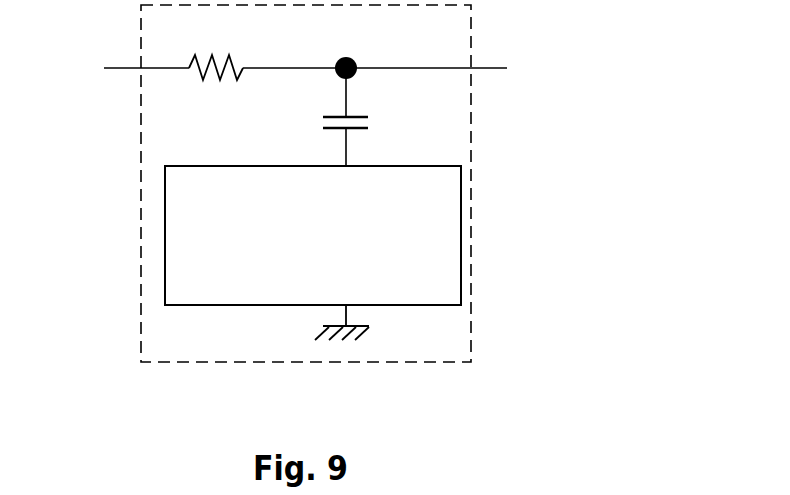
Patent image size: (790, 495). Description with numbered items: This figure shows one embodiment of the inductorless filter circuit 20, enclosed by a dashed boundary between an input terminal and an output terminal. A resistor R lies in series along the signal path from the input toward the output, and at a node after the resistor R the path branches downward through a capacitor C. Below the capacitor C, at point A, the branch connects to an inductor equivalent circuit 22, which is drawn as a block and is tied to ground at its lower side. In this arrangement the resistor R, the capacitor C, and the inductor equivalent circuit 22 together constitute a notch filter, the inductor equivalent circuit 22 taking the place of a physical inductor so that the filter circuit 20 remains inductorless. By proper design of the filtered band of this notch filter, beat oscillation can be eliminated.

The inductorless filter circuit 20 is at (328, 183).
The inductor equivalent circuit 22 is at (328, 287).
The resistor R is at (216, 90).
The capacitor C is at (364, 102).
The node A is at (325, 147).